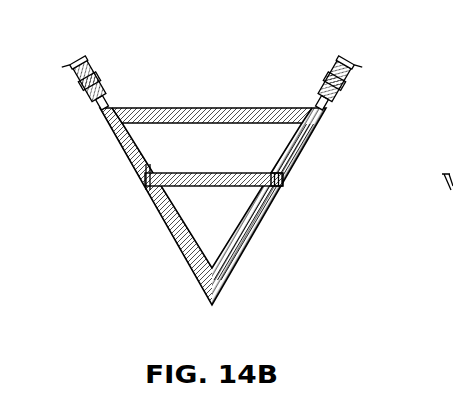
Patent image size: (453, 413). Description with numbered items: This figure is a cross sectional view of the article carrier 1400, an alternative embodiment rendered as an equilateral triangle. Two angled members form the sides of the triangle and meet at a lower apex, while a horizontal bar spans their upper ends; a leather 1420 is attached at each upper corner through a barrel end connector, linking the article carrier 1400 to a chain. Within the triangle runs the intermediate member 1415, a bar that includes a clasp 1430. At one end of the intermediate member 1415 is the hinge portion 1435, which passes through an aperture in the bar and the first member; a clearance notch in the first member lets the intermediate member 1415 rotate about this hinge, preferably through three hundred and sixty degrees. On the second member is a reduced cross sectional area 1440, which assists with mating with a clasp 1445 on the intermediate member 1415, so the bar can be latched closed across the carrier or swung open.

The article carrier 1400 is at (243, 47).
The intermediate member 1415 is at (195, 173).
The leather 1420 is at (95, 75).
The clasp 1430 is at (283, 181).
The hinge portion 1435 is at (142, 172).
The reduced cross sectional area 1440 is at (273, 188).
The clasp 1445 is at (290, 170).